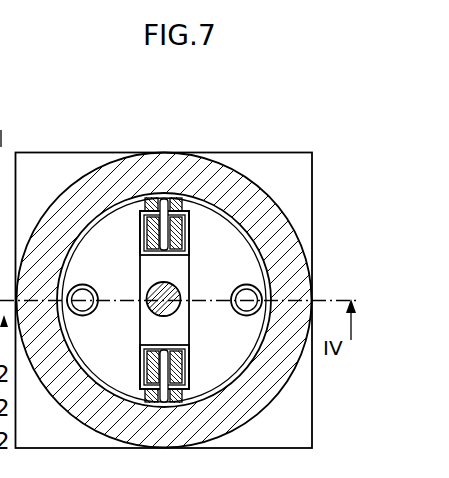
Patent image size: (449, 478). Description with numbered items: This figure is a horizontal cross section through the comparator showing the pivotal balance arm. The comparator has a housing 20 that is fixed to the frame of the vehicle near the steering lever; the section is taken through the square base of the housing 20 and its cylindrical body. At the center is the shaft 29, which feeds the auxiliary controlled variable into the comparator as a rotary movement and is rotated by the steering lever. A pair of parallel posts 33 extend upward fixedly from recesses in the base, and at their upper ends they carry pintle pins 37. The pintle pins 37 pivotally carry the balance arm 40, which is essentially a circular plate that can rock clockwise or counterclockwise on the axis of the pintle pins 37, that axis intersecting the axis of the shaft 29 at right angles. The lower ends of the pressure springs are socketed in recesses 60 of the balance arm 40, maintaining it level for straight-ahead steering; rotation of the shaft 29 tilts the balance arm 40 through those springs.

The housing 20 is at (0, 108).
The shaft 29 is at (160, 297).
The posts 33 is at (141, 214).
The pintle pins 37 is at (164, 209).
The balance arm 40 is at (240, 187).
The recesses 60 is at (311, 239).